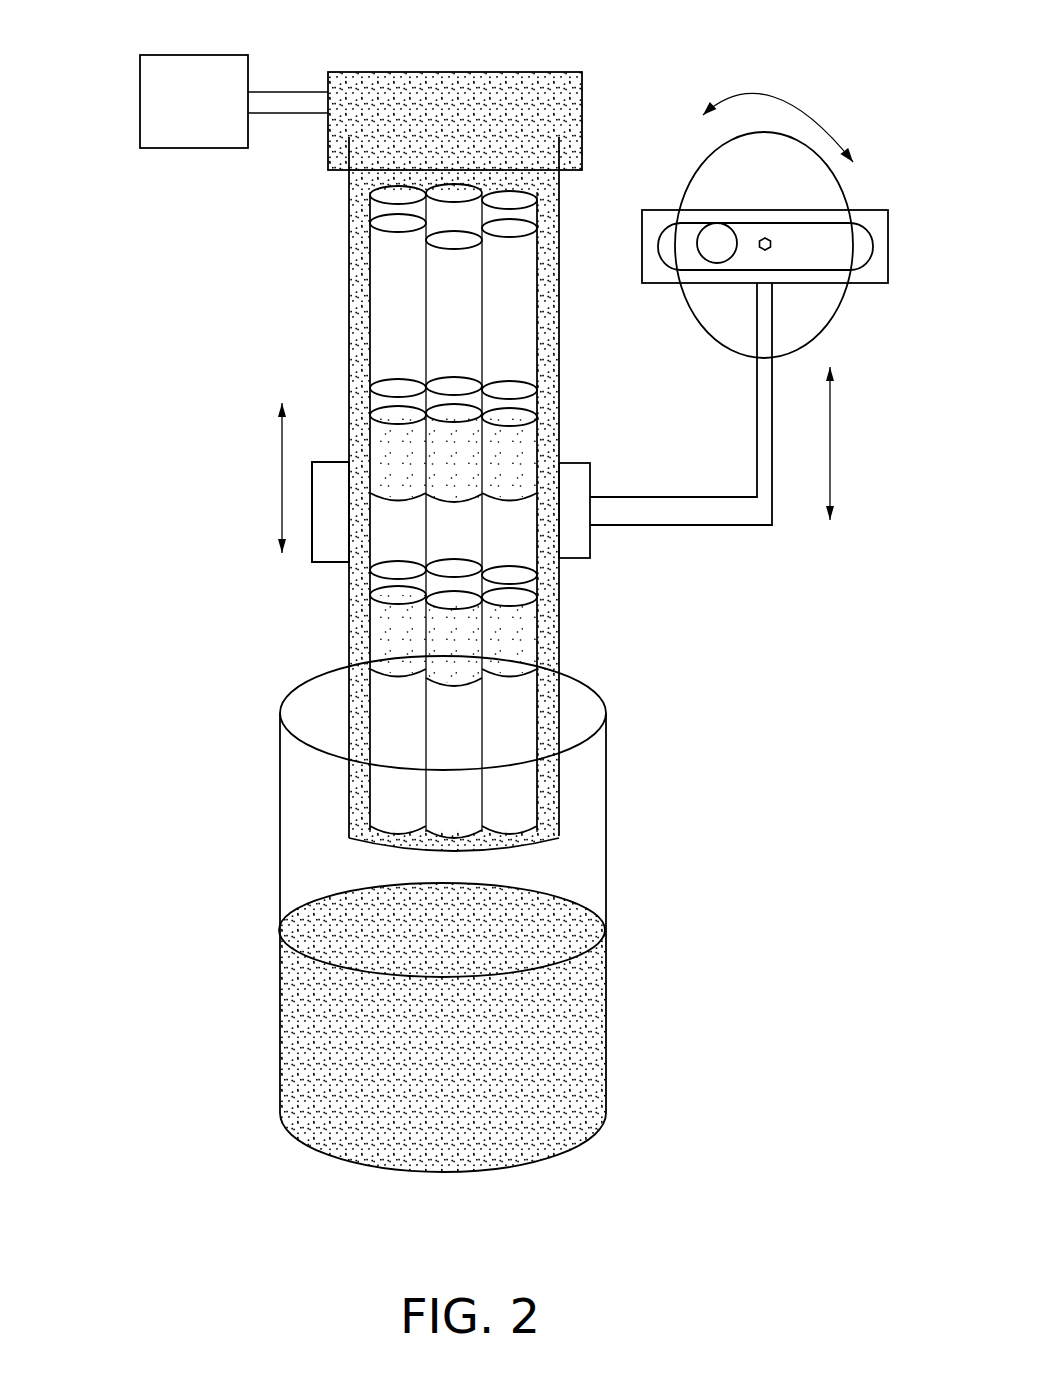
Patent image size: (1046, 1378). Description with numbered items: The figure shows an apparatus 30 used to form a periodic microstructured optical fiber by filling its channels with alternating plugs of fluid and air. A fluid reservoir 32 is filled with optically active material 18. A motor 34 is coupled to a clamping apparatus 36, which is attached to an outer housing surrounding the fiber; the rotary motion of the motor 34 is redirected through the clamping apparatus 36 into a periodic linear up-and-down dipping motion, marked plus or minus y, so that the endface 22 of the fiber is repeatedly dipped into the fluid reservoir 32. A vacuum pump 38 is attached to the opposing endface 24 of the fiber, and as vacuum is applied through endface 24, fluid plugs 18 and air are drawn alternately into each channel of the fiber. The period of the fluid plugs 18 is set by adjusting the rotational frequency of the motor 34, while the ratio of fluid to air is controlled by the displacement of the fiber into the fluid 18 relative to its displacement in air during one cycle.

The optically active material 18 is at (520, 450).
The endface 22 is at (560, 838).
The opposing endface 24 is at (458, 183).
The apparatus 30 is at (808, 863).
The fluid reservoir 32 is at (598, 866).
The motor 34 is at (840, 242).
The clamping apparatus 36 is at (327, 563).
The vacuum pump 38 is at (156, 95).